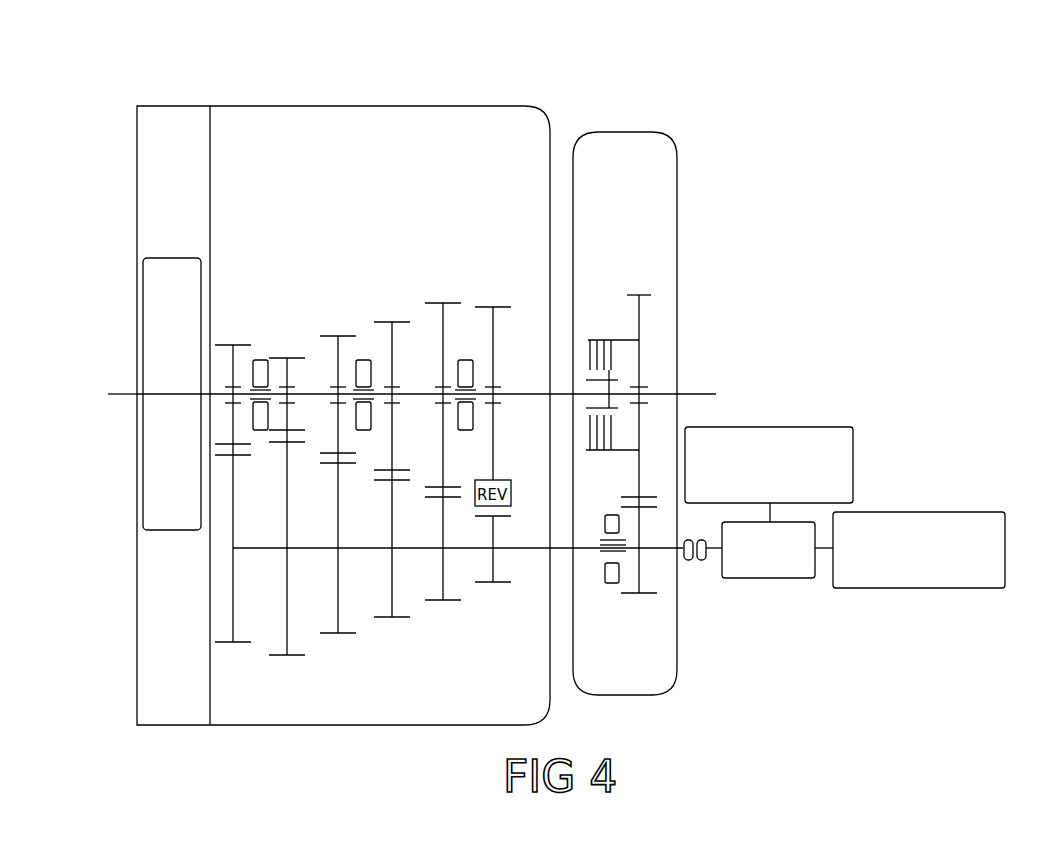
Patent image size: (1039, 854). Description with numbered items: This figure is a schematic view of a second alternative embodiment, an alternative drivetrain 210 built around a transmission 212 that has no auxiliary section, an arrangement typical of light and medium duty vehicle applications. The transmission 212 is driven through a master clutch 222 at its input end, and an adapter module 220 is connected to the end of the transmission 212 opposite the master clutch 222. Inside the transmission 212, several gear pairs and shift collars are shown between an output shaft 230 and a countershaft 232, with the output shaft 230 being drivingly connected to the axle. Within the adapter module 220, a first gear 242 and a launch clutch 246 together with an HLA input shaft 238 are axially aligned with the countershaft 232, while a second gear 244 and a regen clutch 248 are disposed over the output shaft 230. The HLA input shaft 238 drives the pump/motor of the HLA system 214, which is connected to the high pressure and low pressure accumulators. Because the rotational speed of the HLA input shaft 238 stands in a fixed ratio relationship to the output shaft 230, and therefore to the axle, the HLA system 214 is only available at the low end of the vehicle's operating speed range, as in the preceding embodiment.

The drivetrain 210 is at (668, 400).
The transmission 212 is at (368, 100).
The HLA system 214 is at (923, 385).
The adapter module 220 is at (640, 698).
The master clutch 222 is at (192, 405).
The output shaft 230 is at (537, 394).
The countershaft 232 is at (410, 551).
The HLA input shaft 238 is at (716, 560).
The first gear 242 is at (650, 596).
The second gear 244 is at (645, 294).
The launch clutch 246 is at (610, 585).
The regen clutch 248 is at (590, 340).